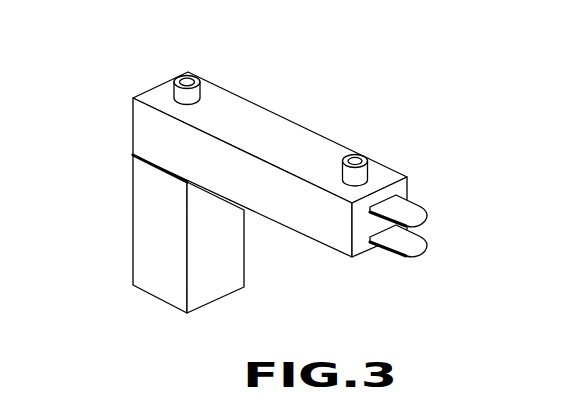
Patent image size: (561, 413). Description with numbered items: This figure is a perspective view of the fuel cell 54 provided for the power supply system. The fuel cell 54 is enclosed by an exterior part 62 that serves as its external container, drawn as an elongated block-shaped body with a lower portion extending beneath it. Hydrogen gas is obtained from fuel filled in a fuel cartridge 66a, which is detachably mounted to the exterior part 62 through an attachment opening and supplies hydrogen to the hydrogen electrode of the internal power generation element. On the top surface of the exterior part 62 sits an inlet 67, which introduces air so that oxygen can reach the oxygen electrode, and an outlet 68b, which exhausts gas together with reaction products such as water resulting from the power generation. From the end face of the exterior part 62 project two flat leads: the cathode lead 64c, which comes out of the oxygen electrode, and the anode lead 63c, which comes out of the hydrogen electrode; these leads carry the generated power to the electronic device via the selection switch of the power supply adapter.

The fuel cell 54 is at (279, 162).
The exterior part 62 is at (132, 118).
The fuel cartridge 66a is at (221, 272).
The inlet 67 is at (173, 83).
The outlet 68b is at (376, 163).
The cathode lead 64c is at (413, 210).
The anode lead 63c is at (400, 243).